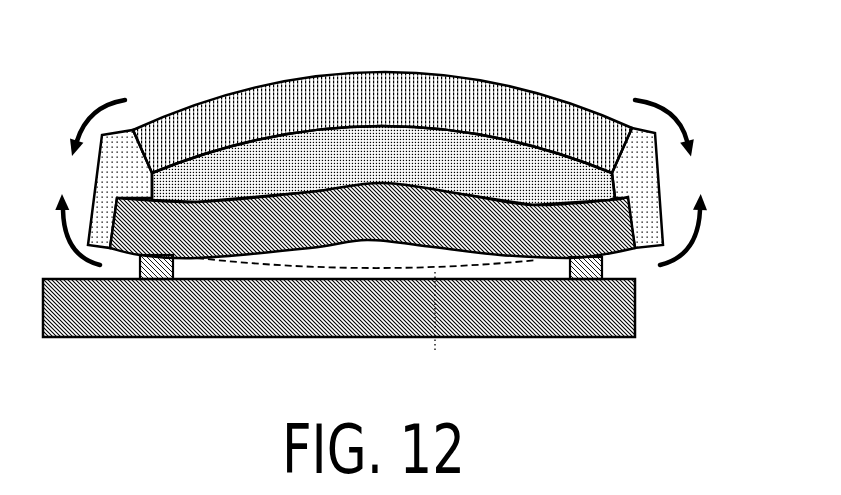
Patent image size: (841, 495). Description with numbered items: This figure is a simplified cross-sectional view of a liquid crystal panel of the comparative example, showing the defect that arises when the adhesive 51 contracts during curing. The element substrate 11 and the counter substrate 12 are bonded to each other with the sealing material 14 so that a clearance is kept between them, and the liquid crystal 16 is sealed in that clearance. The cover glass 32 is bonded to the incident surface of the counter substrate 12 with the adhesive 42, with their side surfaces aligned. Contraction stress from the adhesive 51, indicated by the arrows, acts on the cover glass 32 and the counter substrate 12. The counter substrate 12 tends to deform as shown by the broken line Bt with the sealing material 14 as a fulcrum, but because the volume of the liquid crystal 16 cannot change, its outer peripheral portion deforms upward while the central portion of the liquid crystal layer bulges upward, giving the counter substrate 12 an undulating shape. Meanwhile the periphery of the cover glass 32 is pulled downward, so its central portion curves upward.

The element substrate 11 is at (277, 327).
The counter substrate 12 is at (273, 200).
The sealing material 14 is at (603, 267).
The liquid crystal 16 is at (360, 258).
The cover glass 32 is at (346, 84).
The adhesive 42 is at (533, 175).
The adhesive 51 is at (97, 178).
The broken line Bt is at (438, 325).